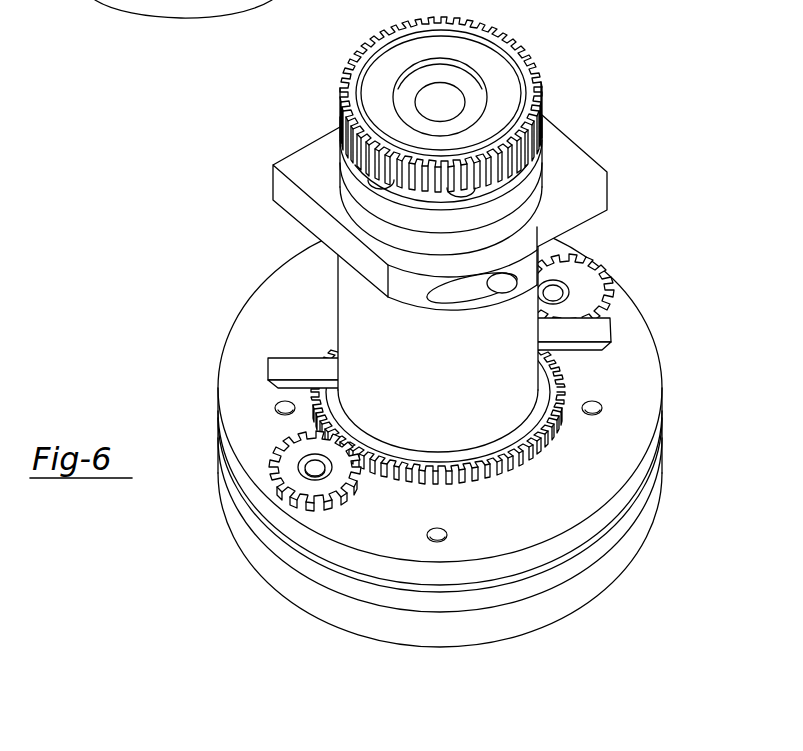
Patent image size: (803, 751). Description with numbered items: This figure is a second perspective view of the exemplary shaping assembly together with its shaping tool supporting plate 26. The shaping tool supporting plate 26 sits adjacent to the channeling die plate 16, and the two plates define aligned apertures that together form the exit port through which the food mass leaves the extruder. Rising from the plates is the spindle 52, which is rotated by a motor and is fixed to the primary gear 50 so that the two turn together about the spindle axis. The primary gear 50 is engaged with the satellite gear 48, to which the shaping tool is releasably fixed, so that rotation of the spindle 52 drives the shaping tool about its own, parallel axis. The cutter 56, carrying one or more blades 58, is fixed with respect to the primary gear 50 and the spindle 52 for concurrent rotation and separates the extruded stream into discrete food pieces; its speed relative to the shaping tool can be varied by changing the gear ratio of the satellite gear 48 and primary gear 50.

The channeling die plate 16 is at (303, 600).
The shaping tool supporting plate 26 is at (583, 488).
The satellite gear 48 is at (272, 478).
The primary gear 50 is at (565, 376).
The spindle 52 is at (360, 310).
The cutter 56 is at (188, 240).
The blade 58 is at (275, 378).